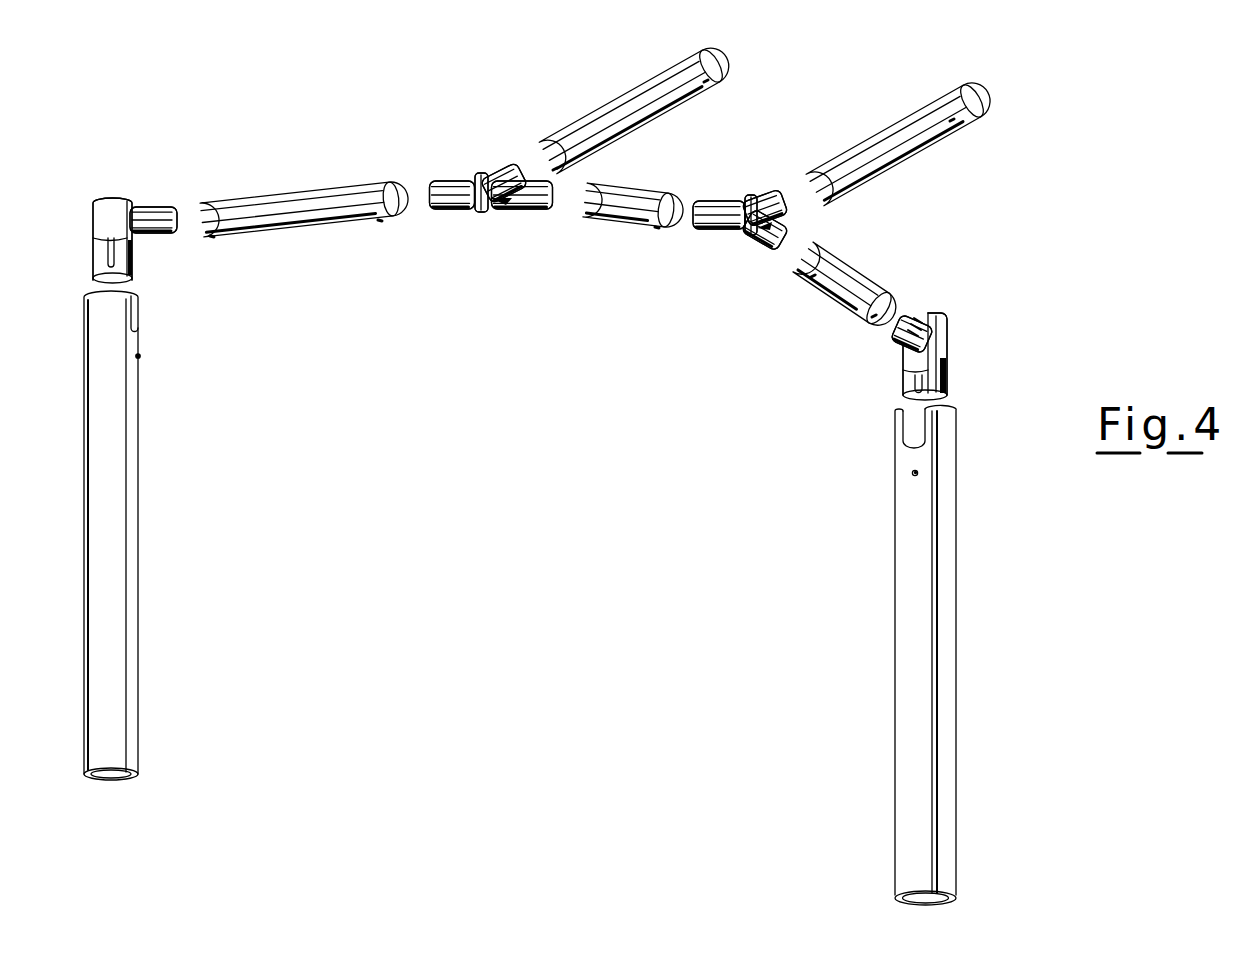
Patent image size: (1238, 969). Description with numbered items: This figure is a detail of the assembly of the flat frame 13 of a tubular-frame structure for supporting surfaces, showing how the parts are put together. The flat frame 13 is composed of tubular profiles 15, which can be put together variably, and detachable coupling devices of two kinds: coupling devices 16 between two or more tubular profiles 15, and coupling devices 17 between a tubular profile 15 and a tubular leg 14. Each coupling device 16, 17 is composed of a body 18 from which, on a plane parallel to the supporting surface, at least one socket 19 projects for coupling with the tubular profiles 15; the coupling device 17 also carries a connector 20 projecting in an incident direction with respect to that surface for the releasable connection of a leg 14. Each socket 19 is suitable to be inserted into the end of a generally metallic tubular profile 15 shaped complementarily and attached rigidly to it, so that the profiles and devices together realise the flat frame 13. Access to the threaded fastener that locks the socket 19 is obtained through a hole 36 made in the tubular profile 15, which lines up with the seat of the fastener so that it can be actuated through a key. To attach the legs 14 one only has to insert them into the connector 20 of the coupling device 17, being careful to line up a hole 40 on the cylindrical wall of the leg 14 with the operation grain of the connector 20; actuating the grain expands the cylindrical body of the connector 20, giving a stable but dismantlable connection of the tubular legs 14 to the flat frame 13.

The flat frame 13 is at (588, 556).
The tubular leg 14 is at (122, 690).
The tubular profile 15 is at (297, 202).
The coupling device between tubular profiles 16 is at (478, 218).
The coupling device between tubular profile and leg 17 is at (95, 191).
The body 18 is at (113, 207).
The socket 19 is at (177, 208).
The connector 20 is at (105, 258).
The hole 36 is at (212, 237).
The hole 40 is at (140, 357).